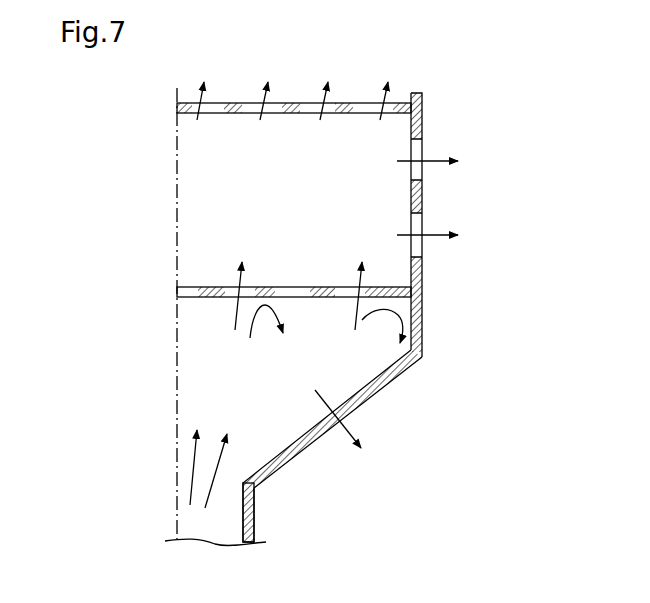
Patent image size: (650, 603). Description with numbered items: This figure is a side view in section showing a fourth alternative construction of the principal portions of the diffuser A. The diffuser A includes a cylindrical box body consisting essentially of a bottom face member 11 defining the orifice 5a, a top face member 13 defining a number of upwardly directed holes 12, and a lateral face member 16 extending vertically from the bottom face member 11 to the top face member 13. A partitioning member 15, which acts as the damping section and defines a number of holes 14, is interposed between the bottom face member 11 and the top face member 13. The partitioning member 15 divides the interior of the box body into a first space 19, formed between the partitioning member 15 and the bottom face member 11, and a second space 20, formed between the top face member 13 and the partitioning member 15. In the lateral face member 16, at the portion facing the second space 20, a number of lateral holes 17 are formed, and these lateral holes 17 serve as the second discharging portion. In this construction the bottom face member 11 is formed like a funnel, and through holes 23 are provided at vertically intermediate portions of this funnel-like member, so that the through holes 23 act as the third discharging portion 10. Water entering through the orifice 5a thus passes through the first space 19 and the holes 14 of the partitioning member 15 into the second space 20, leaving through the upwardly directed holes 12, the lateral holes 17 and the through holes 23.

The orifice 5a is at (241, 494).
The third discharging portion 10 is at (386, 462).
The bottom face member 11 is at (290, 465).
The upwardly directed holes 12 is at (218, 103).
The top face member 13 is at (297, 103).
The holes 14 is at (226, 287).
The partitioning member 15 is at (266, 287).
The lateral face member 16 is at (422, 278).
The lateral holes 17 is at (418, 148).
The first space 19 is at (294, 200).
The second space 20 is at (294, 403).
The through holes 23 is at (360, 405).
The diffuser A is at (458, 96).